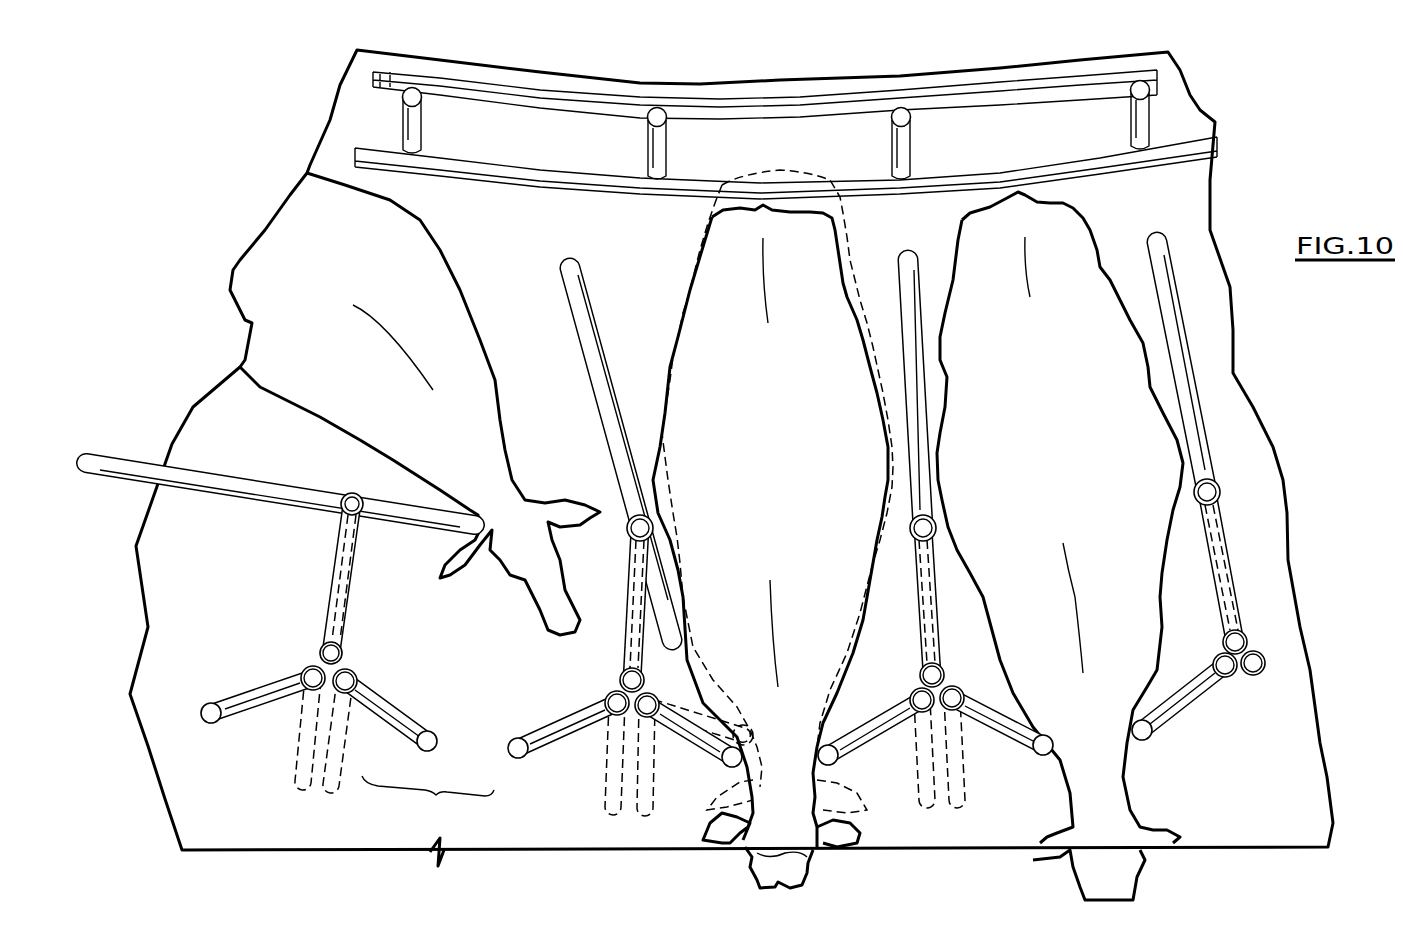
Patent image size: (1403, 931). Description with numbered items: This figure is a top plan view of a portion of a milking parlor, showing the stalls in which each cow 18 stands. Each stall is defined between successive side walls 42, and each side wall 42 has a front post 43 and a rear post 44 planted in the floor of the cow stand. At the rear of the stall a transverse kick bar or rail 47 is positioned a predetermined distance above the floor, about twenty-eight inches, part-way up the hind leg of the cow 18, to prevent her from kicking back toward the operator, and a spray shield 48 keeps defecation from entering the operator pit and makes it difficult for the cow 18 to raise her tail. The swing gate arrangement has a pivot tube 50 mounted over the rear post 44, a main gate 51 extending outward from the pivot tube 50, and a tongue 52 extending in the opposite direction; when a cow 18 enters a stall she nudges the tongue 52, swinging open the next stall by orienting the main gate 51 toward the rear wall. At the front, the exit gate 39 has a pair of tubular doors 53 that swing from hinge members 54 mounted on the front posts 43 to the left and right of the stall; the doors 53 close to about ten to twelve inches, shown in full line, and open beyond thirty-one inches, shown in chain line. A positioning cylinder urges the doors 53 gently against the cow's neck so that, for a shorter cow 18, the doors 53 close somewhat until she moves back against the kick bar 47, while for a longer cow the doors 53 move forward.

The cow 18 is at (707, 258).
The exit gate 39 is at (428, 800).
The side wall 42 is at (623, 630).
The front post 43 is at (613, 673).
The rear post 44 is at (627, 538).
The kick bar 47 is at (585, 183).
The spray shield panel 48 is at (585, 108).
The pivot tube 50 is at (355, 492).
The main gate 51 is at (250, 493).
The tongue 52 is at (415, 525).
The doors 53 is at (383, 704).
The hinge members 54 is at (347, 657).